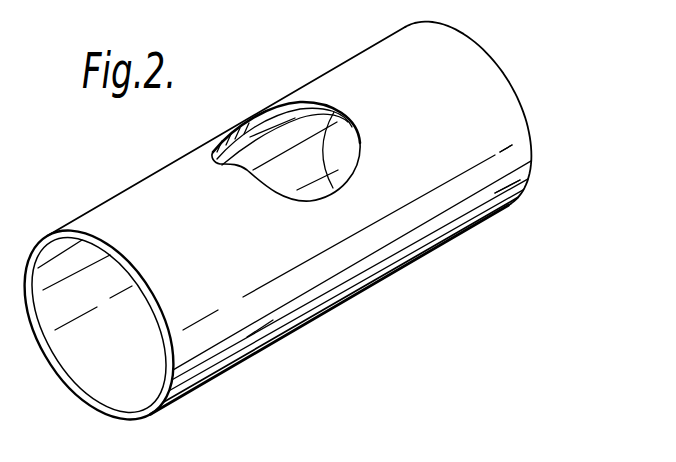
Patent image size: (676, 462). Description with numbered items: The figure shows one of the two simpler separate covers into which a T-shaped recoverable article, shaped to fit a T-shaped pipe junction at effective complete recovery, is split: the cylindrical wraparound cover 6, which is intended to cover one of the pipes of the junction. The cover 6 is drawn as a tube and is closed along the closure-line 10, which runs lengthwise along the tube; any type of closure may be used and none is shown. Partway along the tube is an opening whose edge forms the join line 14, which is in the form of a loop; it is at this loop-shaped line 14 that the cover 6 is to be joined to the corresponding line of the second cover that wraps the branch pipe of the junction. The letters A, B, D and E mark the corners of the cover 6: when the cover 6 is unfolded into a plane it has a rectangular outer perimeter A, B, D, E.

The closure-line 10 is at (298, 292).
The join line 14 is at (333, 111).
The wraparound cover 6 is at (281, 319).
The corner of outer perimeter ABDE A is at (526, 138).
The corner of outer perimeter ABDE B is at (524, 175).
The corner of outer perimeter ABDE D is at (99, 325).
The corner of outer perimeter ABDE E is at (102, 325).